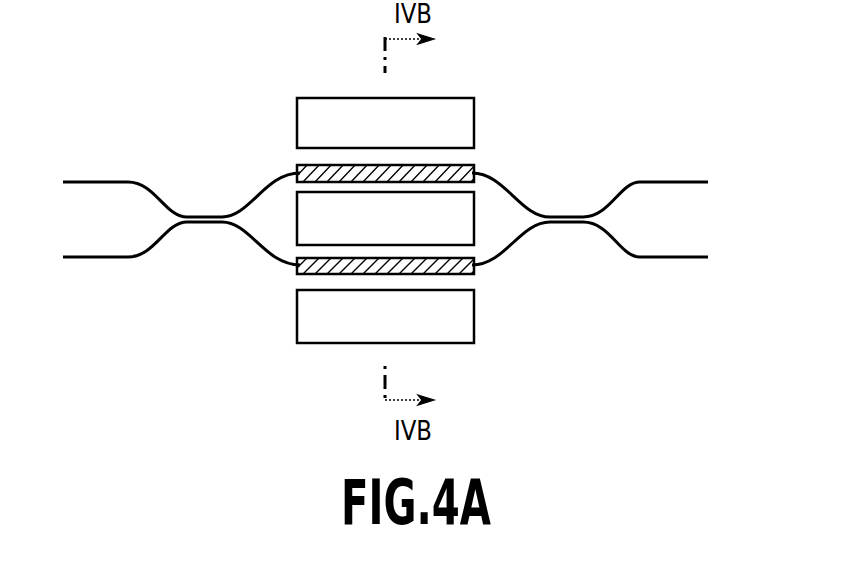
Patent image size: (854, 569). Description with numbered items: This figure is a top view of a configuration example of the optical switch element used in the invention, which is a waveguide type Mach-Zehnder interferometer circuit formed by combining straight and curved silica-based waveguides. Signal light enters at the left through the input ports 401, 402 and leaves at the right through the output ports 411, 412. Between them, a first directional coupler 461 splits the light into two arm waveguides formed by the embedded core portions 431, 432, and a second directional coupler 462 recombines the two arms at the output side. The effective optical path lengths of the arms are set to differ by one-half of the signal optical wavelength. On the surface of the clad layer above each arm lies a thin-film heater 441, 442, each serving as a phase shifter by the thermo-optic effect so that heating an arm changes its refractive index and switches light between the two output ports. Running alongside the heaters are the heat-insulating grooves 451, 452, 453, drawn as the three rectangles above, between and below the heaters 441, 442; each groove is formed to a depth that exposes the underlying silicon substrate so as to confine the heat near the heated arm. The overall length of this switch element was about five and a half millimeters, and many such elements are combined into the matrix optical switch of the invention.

The input port 401 is at (73, 180).
The input port 402 is at (71, 260).
The output port 411 is at (697, 180).
The output port 412 is at (693, 261).
The embedded core portion 431 is at (273, 179).
The embedded core portion 432 is at (260, 247).
The thin-film heater 441 is at (352, 172).
The thin-film heater 442 is at (332, 268).
The heat-insulating groove 451 is at (435, 113).
The heat-insulating groove 452 is at (438, 220).
The heat-insulating groove 453 is at (447, 328).
The directional coupler 461 is at (202, 215).
The directional coupler 462 is at (575, 213).